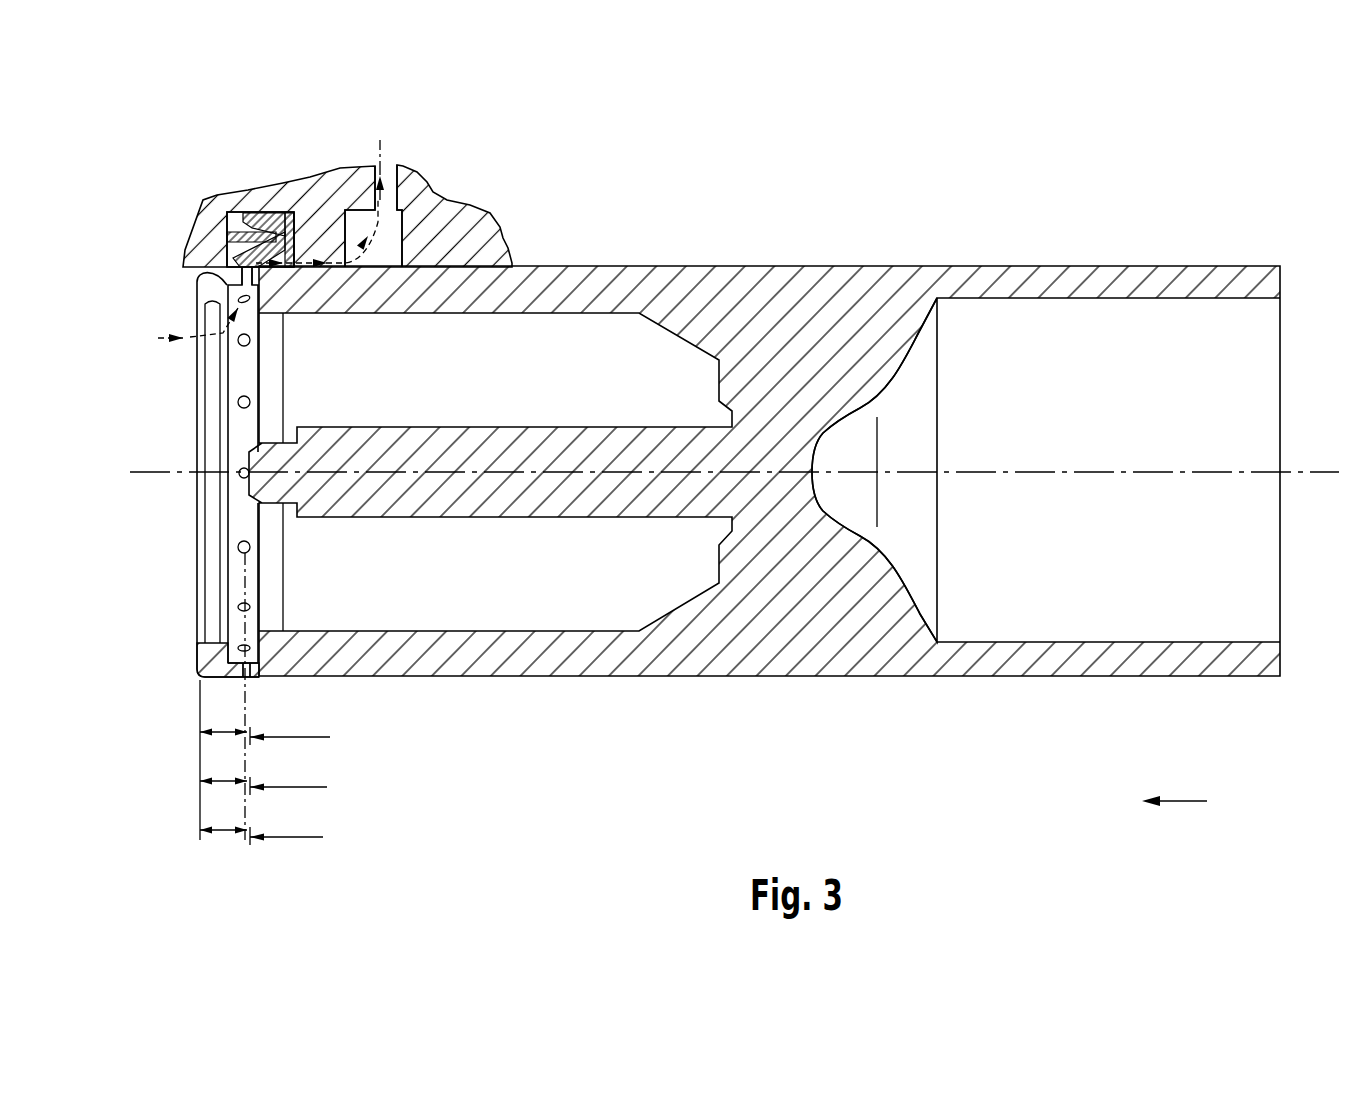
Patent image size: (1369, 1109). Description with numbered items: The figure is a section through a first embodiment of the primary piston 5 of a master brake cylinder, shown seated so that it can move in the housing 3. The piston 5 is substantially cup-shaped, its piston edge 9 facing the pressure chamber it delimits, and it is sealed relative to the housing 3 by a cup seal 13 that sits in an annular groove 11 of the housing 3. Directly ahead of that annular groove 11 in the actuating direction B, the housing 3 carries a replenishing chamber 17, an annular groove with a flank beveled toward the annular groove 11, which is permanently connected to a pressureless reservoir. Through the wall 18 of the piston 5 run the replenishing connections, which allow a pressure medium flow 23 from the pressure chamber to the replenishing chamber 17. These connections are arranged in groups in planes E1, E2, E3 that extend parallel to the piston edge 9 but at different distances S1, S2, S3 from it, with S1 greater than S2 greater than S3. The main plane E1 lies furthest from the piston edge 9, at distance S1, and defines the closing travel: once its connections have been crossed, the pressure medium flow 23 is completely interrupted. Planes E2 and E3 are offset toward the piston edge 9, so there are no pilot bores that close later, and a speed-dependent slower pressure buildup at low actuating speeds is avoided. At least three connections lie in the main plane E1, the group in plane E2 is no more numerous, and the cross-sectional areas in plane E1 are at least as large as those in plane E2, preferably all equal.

The housing 3 is at (442, 232).
The primary piston 5 is at (933, 680).
The piston edge 9 is at (199, 656).
The annular groove 11 is at (232, 212).
The cup seal 13 is at (285, 222).
The replenishing chamber 17 is at (392, 230).
The wall 18 is at (614, 655).
The pressure medium flow 23 is at (157, 338).
The actuating direction B is at (1174, 789).
The distance from the piston edge to plane E1 S1 is at (223, 718).
The distance from the piston edge to plane E2 S2 is at (223, 767).
The distance from the piston edge to plane E3 S3 is at (223, 817).
The main plane E1 is at (290, 727).
The plane E2 is at (288, 777).
The plane E3 is at (286, 827).